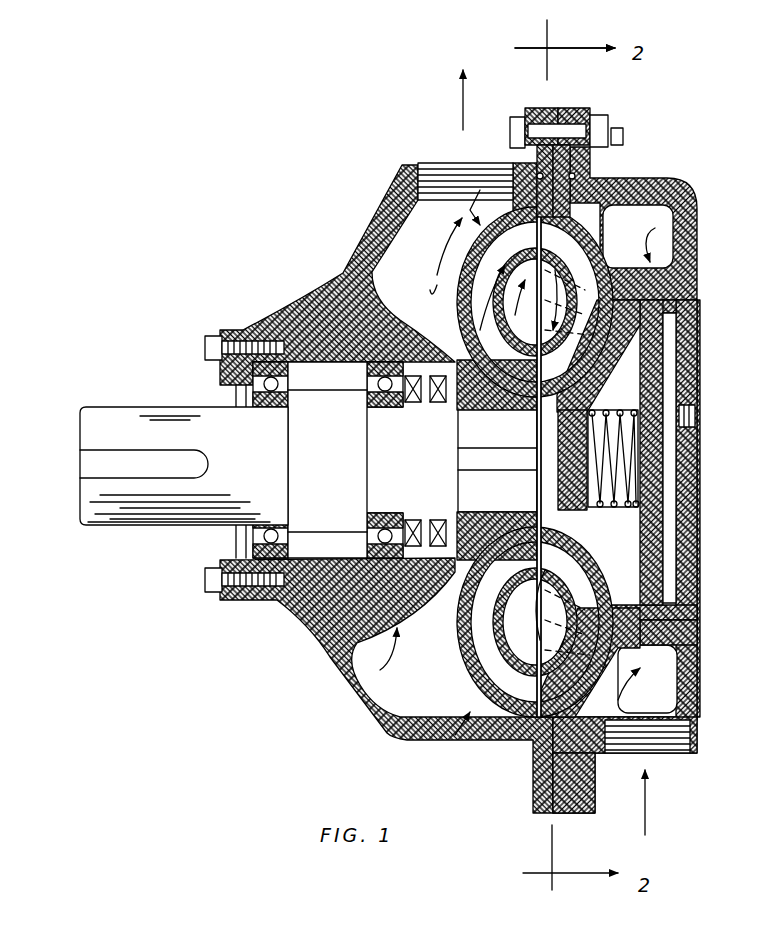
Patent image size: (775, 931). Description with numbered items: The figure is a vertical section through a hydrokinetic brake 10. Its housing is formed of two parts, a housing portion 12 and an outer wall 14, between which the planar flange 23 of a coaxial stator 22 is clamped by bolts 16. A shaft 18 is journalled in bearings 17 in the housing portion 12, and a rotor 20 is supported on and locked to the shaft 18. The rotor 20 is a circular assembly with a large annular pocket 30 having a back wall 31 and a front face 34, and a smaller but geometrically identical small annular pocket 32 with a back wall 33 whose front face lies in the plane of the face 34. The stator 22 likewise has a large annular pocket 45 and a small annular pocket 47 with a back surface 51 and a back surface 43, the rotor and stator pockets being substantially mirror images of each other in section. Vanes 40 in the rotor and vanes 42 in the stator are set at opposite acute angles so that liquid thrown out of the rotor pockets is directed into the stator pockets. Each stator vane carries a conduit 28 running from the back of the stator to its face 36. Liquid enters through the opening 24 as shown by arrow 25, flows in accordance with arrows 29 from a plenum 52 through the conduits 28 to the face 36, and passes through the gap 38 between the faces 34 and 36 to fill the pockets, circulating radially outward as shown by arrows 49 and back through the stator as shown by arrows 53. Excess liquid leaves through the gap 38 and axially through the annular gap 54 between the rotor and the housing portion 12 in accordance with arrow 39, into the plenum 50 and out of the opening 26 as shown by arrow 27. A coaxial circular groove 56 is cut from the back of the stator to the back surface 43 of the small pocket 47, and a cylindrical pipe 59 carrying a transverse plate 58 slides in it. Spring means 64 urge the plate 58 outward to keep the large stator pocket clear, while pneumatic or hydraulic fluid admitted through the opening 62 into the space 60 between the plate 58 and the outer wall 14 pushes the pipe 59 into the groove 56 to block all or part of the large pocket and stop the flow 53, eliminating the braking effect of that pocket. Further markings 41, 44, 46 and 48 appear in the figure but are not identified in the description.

The brake 10 is at (318, 273).
The housing portion 12 is at (368, 243).
The housing outer wall 14 is at (700, 240).
The bolts 16 is at (622, 132).
The bearings 17 is at (240, 540).
The shaft 18 is at (172, 405).
The rotor 20 is at (500, 405).
The stator 22 is at (603, 373).
The planar flange 23 is at (560, 110).
The inlet opening 24 is at (686, 756).
The inlet flow arrow 25 is at (650, 805).
The outlet opening 26 is at (428, 163).
The outlet flow arrow 27 is at (468, 100).
The conduit 28 is at (552, 633).
The plenum flow arrows 29 is at (660, 225).
The large annular pocket of rotor 30 is at (512, 650).
The back wall of large rotor pocket 31 is at (520, 680).
The small annular pocket of rotor 32 is at (520, 600).
The back wall of small rotor pocket 33 is at (528, 615).
The rotor front face 34 is at (530, 540).
The stator face 36 is at (533, 552).
The gap 38 is at (590, 560).
The axial flow arrow 39 is at (483, 205).
The rotor vanes 40 is at (502, 732).
The flow arrow 41 is at (437, 240).
The stator vanes 42 is at (585, 580).
The back surface of small stator pocket 43 is at (585, 597).
The turbine vane 44 is at (585, 590).
The large annular pocket of stator 45 is at (597, 338).
The turbine chamber 46 is at (573, 249).
The small annular pocket of stator 47 is at (554, 300).
The chamber 48 is at (570, 384).
The radially outward flow arrows 49 is at (500, 318).
The outlet plenum 50 is at (420, 264).
The back surface of small stator pocket 51 is at (578, 230).
The inlet plenum 52 is at (667, 684).
The stator return flow arrows 53 is at (609, 388).
The annular gap 54 is at (520, 210).
The circular groove 56 is at (624, 348).
The transverse plate 58 is at (668, 480).
The cylindrical pipe 59 is at (640, 605).
The pressure space 60 is at (672, 532).
The fluid opening 62 is at (698, 424).
The spring means 64 is at (598, 468).